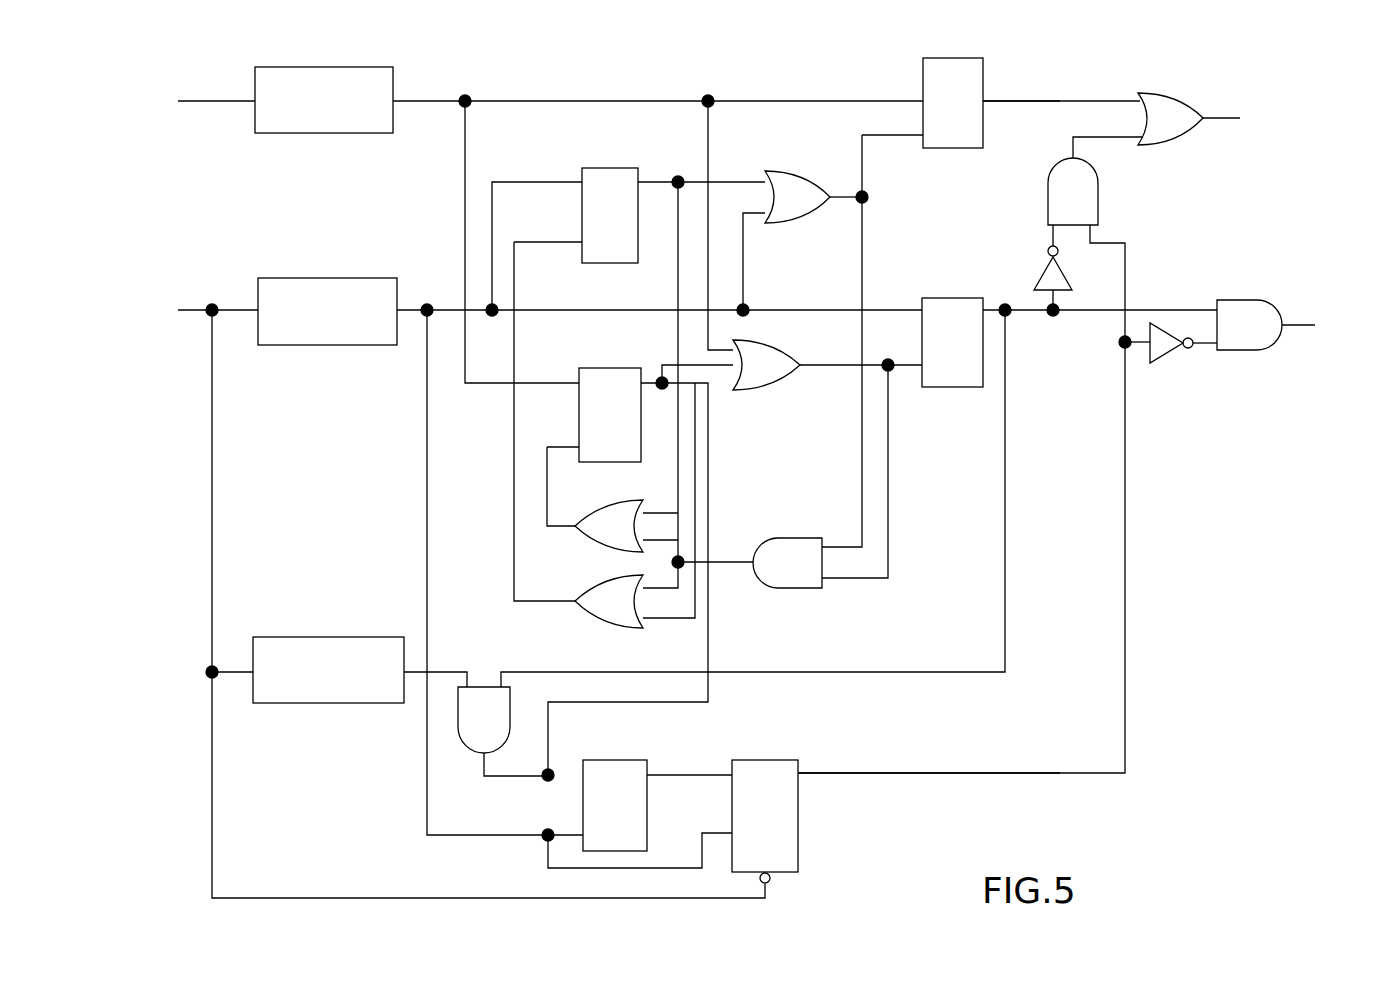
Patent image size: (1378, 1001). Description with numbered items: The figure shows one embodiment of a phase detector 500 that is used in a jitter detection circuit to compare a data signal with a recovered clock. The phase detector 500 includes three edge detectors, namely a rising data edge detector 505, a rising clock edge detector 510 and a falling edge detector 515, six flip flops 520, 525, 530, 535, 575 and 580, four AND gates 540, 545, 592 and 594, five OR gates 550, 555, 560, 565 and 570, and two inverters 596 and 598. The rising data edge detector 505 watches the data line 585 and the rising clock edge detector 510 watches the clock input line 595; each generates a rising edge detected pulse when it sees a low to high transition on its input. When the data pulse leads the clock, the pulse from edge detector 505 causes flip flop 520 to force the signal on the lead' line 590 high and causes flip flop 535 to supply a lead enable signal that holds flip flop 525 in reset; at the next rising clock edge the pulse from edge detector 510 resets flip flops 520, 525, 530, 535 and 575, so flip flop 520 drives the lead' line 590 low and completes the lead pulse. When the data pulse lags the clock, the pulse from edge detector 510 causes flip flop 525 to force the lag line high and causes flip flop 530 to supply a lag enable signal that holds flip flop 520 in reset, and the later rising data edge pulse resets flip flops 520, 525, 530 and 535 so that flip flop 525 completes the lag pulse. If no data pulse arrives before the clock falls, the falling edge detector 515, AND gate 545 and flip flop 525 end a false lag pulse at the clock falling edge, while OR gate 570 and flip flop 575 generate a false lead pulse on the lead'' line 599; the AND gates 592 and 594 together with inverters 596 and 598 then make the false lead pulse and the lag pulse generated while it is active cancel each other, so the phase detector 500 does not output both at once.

The phase detector 500 is at (800, 92).
The rising data edge detector 505 is at (312, 133).
The rising clock edge detector 510 is at (330, 278).
The falling edge detector 515 is at (317, 637).
The flip flop 520 is at (940, 148).
The flip flop 525 is at (952, 298).
The flip flop 530 is at (584, 170).
The flip flop 535 is at (579, 420).
The AND gate 540 is at (800, 588).
The AND gate 545 is at (470, 750).
The OR gate 550 is at (785, 224).
The OR gate 555 is at (765, 390).
The OR gate 560 is at (592, 545).
The OR gate 565 is at (595, 625).
The OR gate 570 is at (1162, 145).
The flip flop 575 is at (610, 760).
The flip flop 580 is at (760, 760).
The data line 585 is at (242, 99).
The lead' line 590 is at (1094, 100).
The AND gate 592 is at (1048, 190).
The AND gate 594 is at (1240, 350).
The clock input line 595 is at (240, 308).
The inverter 596 is at (1040, 270).
The inverter 598 is at (1165, 362).
The lead'' line 599 is at (984, 773).